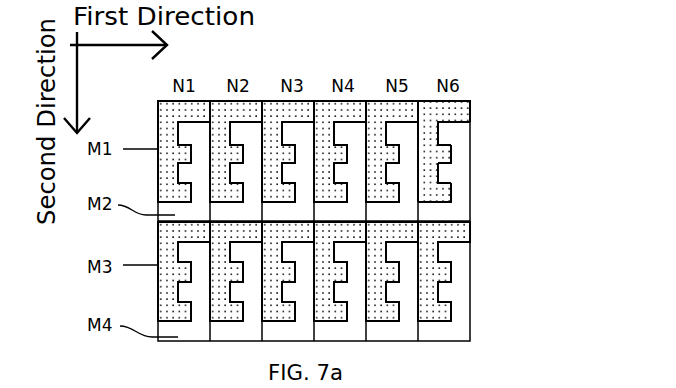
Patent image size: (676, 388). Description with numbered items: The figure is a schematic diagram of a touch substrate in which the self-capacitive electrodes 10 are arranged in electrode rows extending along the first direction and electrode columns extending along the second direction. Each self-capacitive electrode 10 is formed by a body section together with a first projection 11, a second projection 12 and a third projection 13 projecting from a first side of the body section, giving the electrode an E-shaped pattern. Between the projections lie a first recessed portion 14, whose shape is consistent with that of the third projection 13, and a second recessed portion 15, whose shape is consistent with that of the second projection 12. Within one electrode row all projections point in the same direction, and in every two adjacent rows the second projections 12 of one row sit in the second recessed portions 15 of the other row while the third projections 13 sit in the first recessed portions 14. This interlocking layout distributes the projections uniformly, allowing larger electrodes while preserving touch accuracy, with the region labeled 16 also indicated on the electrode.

The self-capacitive electrode 10 is at (465, 290).
The first projection 11 is at (458, 112).
The second projection 12 is at (443, 157).
The third projection 13 is at (442, 192).
The first recessed portion 14 is at (440, 139).
The second recessed portion 15 is at (437, 175).
The trunk electrode 16 is at (427, 127).